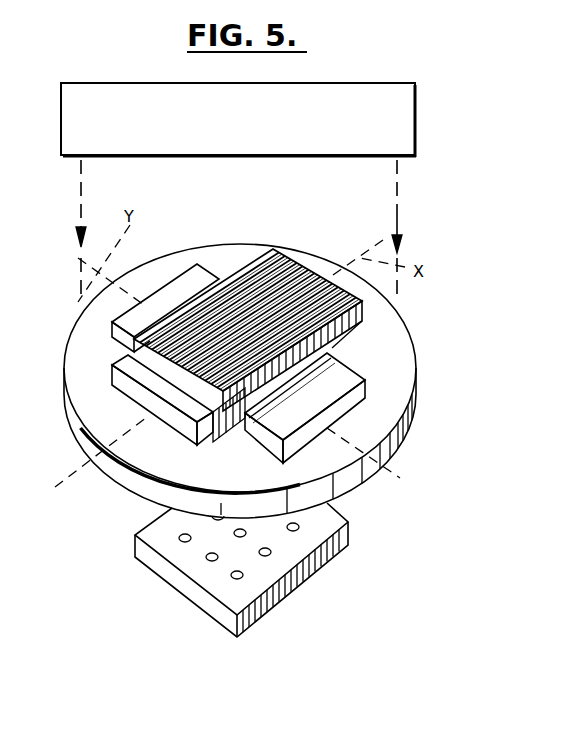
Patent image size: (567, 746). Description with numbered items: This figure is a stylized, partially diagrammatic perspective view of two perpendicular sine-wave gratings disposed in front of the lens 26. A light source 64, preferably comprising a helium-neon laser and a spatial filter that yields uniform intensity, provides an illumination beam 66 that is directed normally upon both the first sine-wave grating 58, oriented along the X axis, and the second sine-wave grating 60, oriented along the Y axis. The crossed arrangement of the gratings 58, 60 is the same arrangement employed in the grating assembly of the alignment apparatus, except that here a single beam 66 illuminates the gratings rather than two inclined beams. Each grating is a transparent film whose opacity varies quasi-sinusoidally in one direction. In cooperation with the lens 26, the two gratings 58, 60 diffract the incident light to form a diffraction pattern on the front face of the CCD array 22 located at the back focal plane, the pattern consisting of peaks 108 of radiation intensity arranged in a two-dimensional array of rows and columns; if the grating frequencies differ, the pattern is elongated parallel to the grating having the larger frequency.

The CCD array 22 is at (317, 565).
The lens 26 is at (85, 435).
The first sine-wave grating 58 is at (366, 312).
The second sine-wave grating 60 is at (340, 412).
The light source 64 is at (357, 83).
The illumination beam 66 is at (393, 215).
The peaks 108 is at (229, 578).